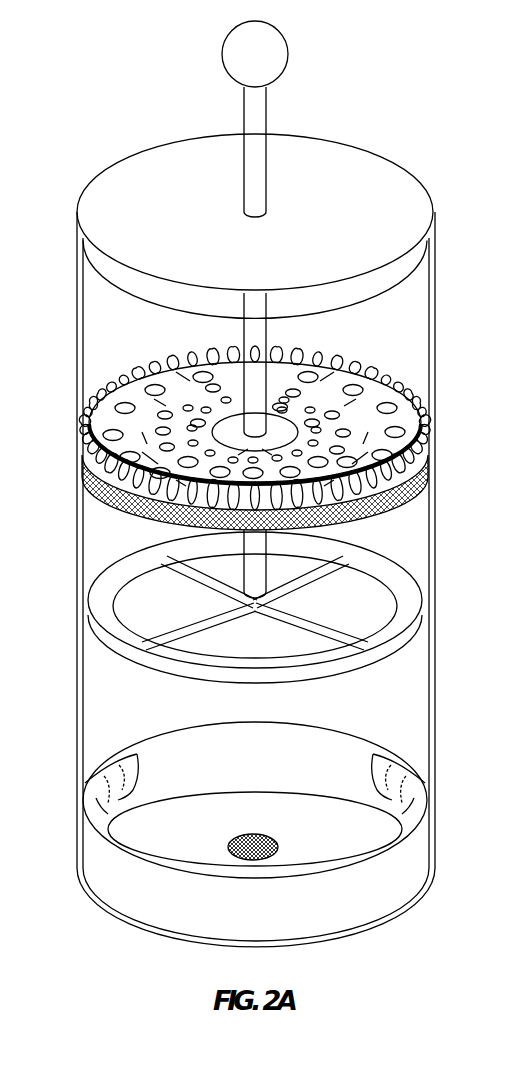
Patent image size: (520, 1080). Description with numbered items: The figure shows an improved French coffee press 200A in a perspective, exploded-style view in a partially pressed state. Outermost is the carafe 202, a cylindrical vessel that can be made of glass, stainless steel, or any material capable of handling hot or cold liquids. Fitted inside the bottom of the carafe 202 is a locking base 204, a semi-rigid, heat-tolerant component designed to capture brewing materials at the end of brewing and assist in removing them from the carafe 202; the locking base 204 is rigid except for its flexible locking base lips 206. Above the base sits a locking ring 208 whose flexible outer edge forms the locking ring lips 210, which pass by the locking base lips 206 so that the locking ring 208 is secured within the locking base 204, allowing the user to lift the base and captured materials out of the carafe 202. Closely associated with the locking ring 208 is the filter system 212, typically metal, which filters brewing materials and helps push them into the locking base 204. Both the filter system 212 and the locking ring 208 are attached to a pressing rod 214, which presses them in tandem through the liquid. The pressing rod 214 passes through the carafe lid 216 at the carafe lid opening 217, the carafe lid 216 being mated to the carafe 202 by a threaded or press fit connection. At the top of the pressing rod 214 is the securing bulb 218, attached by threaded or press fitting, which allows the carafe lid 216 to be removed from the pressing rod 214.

The improved French coffee press 200A is at (449, 511).
The carafe 202 is at (76, 326).
The locking base 204 is at (402, 865).
The locking base lip(s) 206 is at (320, 751).
The locking ring 208 is at (276, 648).
The locking ring lip(s) 210 is at (402, 559).
The filter system 212 is at (405, 367).
The pressing rod 214 is at (262, 332).
The carafe lid 216 is at (342, 153).
The carafe lid opening 217 is at (263, 222).
The securing bulb 218 is at (255, 21).